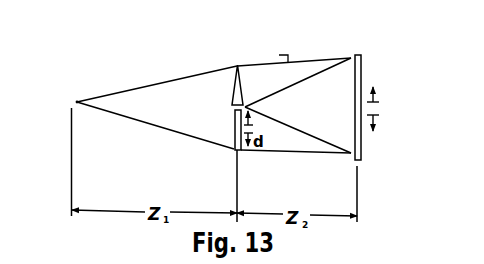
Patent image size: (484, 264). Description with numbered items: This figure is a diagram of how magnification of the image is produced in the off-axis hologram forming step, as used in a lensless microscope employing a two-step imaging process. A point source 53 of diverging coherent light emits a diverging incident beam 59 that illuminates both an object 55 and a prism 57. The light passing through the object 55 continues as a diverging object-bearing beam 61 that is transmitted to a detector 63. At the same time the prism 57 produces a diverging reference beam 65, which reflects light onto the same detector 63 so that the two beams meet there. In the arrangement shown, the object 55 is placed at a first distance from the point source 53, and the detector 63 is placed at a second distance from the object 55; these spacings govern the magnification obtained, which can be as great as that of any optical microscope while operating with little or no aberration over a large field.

The point source 53 is at (75, 101).
The object 55 is at (236, 143).
The prism 57 is at (234, 88).
The diverging incident beam 59 is at (147, 85).
The diverging object-bearing beam 61 is at (273, 153).
The detector 63 is at (362, 63).
The diverging reference beam 65 is at (343, 58).